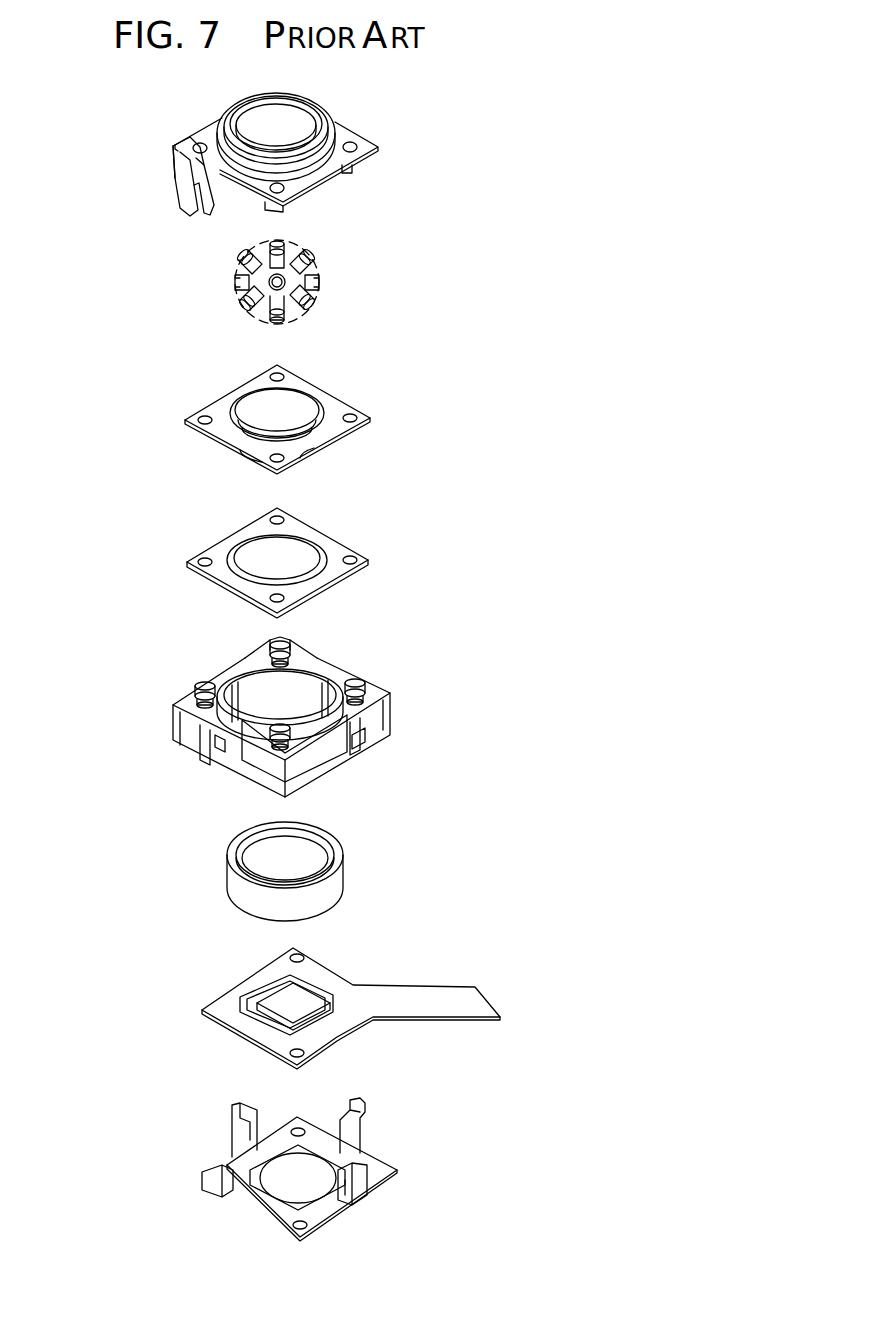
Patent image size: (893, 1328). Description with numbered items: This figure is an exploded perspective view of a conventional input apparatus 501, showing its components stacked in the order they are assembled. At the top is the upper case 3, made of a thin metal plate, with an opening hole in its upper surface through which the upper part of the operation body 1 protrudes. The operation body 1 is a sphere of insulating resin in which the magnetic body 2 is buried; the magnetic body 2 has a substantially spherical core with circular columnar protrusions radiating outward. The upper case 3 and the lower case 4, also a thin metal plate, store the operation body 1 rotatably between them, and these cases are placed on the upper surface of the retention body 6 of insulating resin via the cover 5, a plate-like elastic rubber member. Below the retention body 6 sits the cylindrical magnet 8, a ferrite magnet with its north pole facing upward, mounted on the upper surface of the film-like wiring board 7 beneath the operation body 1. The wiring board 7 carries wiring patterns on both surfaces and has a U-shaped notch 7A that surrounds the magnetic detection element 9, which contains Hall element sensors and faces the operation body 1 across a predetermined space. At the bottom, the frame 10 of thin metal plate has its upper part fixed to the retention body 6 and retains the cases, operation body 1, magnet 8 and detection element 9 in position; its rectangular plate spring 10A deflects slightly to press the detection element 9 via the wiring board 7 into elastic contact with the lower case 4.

The input apparatus 501 is at (530, 248).
The upper case 3 is at (350, 128).
The operation body 1 is at (235, 265).
The magnetic body 2 is at (292, 282).
The lower case 4 is at (340, 407).
The cover 5 is at (333, 543).
The retention body 6 is at (365, 688).
The magnet 8 is at (327, 848).
The wiring board 7 is at (380, 992).
The notch 7A is at (243, 1008).
The magnetic detection element 9 is at (277, 997).
The frame 10 is at (343, 1150).
The plate spring 10A is at (287, 1178).